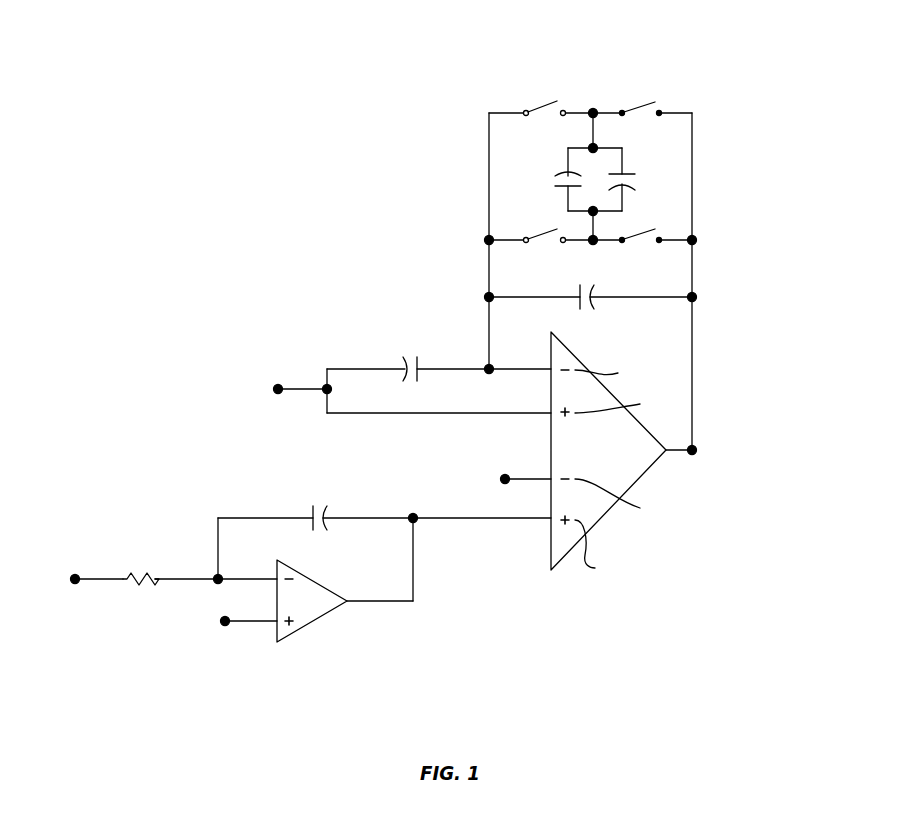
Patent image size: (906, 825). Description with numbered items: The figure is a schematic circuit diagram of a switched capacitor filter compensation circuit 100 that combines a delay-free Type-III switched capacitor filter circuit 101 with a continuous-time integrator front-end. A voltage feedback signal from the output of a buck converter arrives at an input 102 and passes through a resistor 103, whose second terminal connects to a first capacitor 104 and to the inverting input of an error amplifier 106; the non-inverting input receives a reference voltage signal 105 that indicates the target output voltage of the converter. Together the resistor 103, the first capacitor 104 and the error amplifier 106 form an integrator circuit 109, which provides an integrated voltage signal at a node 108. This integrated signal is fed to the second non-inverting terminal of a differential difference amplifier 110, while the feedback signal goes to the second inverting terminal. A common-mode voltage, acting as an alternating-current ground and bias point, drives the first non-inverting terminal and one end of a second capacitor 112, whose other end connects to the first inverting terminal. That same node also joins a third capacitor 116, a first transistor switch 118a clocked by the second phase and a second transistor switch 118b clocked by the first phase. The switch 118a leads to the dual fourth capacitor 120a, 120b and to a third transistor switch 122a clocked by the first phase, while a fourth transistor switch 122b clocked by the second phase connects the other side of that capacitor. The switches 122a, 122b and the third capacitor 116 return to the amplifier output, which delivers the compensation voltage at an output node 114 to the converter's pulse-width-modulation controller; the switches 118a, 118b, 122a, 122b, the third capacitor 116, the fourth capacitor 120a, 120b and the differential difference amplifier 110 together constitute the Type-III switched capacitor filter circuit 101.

The switched capacitor filter (SCF) compensation circuit 100 is at (164, 232).
The Type-III SCF circuit 101 is at (355, 73).
The input 102 is at (75, 572).
The resistor R0 103 is at (130, 565).
The capacitor C0 104 is at (323, 475).
The reference voltage signal VREF 105 is at (196, 644).
The error amplifier 106 is at (310, 612).
The node 108 is at (413, 515).
The integrator circuit 109 is at (173, 473).
The differential difference amplifier (DDA) 110 is at (637, 605).
The second capacitor C2 112 is at (406, 352).
The output node 114 is at (696, 452).
The third capacitor C3 116 is at (591, 301).
The first transistor switch 118a is at (541, 104).
The second transistor switch 118b is at (526, 237).
The fourth capacitor C4 120a is at (502, 174).
The fourth capacitor C4 120b is at (689, 182).
The third transistor switch 122a is at (652, 100).
The fourth transistor switch 122b is at (643, 229).